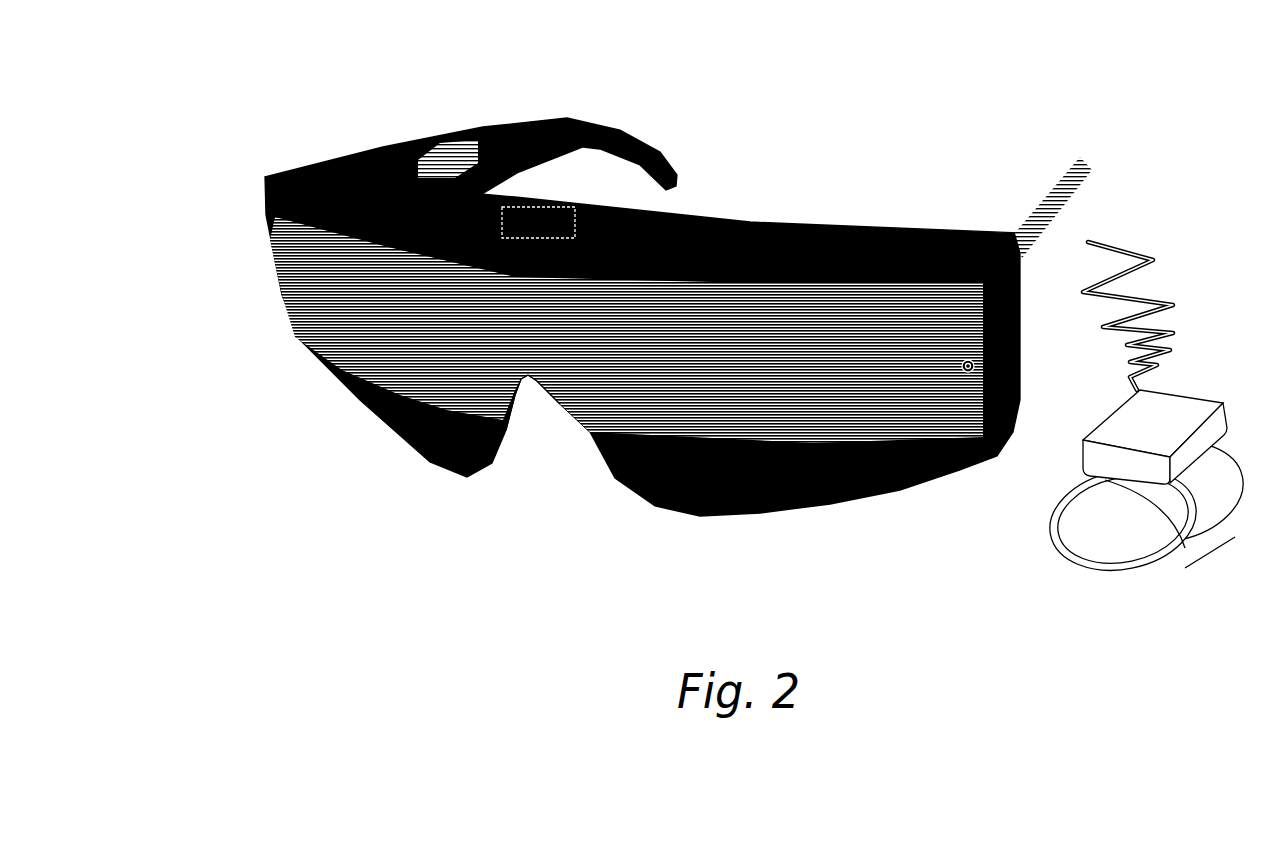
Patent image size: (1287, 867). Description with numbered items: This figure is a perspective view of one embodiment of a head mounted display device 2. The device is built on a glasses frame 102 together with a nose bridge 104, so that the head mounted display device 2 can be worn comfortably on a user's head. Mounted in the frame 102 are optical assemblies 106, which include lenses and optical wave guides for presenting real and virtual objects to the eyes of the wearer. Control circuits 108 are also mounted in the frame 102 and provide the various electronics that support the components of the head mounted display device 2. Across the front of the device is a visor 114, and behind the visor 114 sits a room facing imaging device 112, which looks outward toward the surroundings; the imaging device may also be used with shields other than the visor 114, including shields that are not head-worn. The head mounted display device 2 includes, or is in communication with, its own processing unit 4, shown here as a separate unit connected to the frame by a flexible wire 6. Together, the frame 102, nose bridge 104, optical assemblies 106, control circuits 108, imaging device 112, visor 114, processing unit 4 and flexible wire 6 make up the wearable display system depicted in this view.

The head mounted display device 2 is at (218, 101).
The glasses frame 102 is at (547, 127).
The nose bridge 104 is at (537, 377).
The optical assemblies 106 is at (398, 330).
The control circuits 108 is at (443, 157).
The room facing imaging device 112 is at (543, 217).
The visor 114 is at (847, 225).
The processing unit 4 is at (1207, 410).
The flexible wire 6 is at (1173, 300).